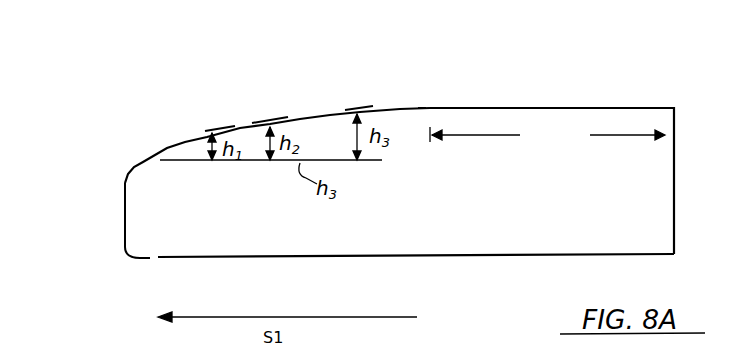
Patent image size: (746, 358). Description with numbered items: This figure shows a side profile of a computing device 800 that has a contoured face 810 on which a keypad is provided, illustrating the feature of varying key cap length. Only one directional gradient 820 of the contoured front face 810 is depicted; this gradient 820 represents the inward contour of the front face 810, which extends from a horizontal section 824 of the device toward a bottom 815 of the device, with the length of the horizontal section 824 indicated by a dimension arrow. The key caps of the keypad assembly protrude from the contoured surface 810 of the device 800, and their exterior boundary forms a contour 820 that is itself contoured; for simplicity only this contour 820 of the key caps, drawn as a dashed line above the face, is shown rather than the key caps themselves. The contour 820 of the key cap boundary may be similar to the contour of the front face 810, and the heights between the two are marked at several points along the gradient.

The computing device 800 is at (628, 84).
The contoured face 810 is at (172, 150).
The bottom 815 is at (128, 210).
The directional gradient 820 is at (301, 112).
The horizontal section 824 is at (547, 141).